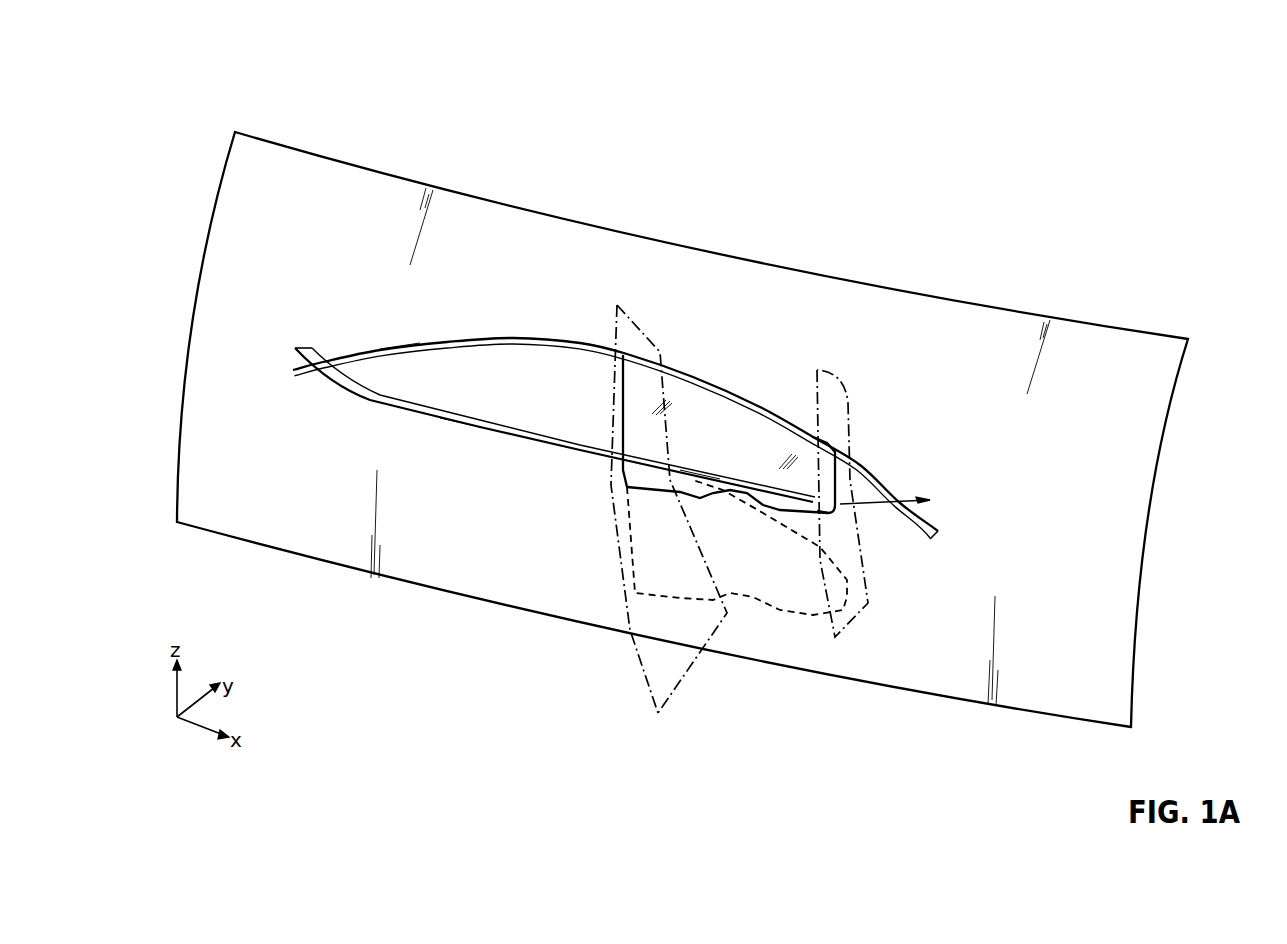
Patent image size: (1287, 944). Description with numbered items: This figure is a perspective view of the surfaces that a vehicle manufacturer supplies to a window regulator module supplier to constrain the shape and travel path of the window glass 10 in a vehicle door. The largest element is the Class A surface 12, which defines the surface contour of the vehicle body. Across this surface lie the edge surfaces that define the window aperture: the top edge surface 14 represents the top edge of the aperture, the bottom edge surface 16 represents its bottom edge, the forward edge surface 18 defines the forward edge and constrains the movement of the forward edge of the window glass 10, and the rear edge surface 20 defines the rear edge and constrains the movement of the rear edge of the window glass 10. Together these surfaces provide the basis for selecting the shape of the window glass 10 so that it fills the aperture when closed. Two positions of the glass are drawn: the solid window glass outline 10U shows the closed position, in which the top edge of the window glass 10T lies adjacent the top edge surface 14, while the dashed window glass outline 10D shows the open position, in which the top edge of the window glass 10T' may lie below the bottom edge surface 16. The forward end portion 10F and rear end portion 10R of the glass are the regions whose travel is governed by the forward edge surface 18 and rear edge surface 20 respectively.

The window glass 10 is at (723, 417).
The solid window glass outline 10U is at (612, 378).
The dashed window glass outline 10D is at (717, 598).
The front end portion of deflector 10F is at (848, 588).
The rear end portion of deflector 10R is at (632, 538).
The top edge of the window glass 10T is at (665, 430).
The top edge of the window glass 10T' is at (714, 312).
The Class A surface 12 is at (960, 318).
The top edge surface 14 is at (400, 347).
The bottom edge surface 16 is at (460, 423).
The forward edge surface 18 is at (836, 416).
The rear edge surface 20 is at (631, 628).